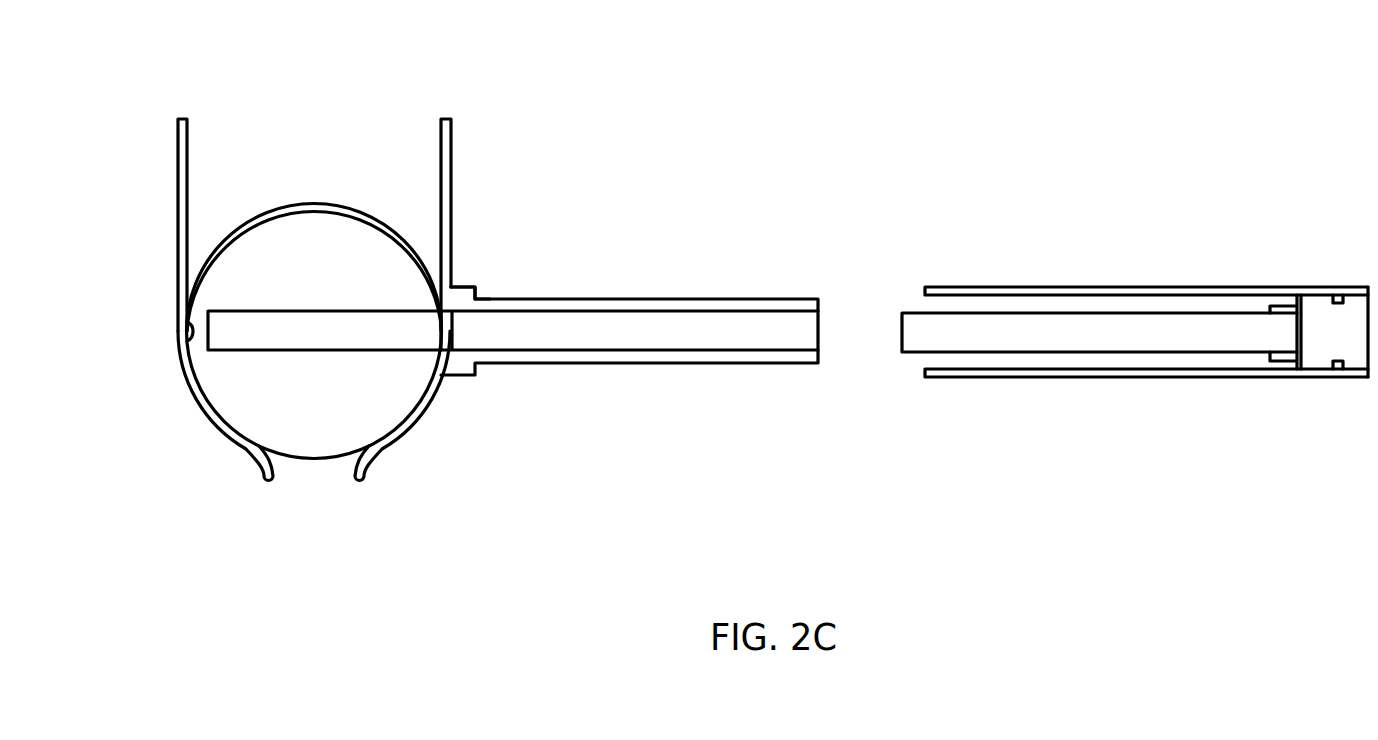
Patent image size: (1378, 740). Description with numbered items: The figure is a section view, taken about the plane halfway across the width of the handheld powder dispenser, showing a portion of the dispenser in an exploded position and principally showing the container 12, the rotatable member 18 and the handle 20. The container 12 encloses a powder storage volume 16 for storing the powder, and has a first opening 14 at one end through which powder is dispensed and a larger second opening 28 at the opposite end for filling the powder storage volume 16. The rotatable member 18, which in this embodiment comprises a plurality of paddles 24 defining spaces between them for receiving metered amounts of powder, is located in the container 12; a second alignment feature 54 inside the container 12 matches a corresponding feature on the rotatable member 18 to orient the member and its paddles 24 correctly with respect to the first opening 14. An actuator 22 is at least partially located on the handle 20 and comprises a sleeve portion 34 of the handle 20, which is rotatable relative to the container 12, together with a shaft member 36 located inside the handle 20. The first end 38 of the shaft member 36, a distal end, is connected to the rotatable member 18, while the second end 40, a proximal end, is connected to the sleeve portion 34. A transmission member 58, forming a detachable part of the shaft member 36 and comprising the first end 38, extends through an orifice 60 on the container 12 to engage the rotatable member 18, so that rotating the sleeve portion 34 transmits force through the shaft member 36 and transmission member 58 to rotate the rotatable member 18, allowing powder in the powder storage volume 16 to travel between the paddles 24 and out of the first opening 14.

The container 12 is at (177, 178).
The first opening 14 is at (323, 475).
The powder storage volume 16 is at (372, 180).
The rotatable member 18 is at (258, 356).
The handle 20 is at (1146, 291).
The actuator 22 is at (1146, 291).
The paddles 24 is at (207, 260).
The second opening 28 is at (305, 135).
The sleeve portion 34 is at (1060, 285).
The shaft member 36 is at (869, 342).
The first end 38 is at (208, 349).
The second end 40 is at (1292, 338).
The second alignment feature 54 is at (189, 331).
The transmission member 58 is at (722, 305).
The orifice 60 is at (452, 303).